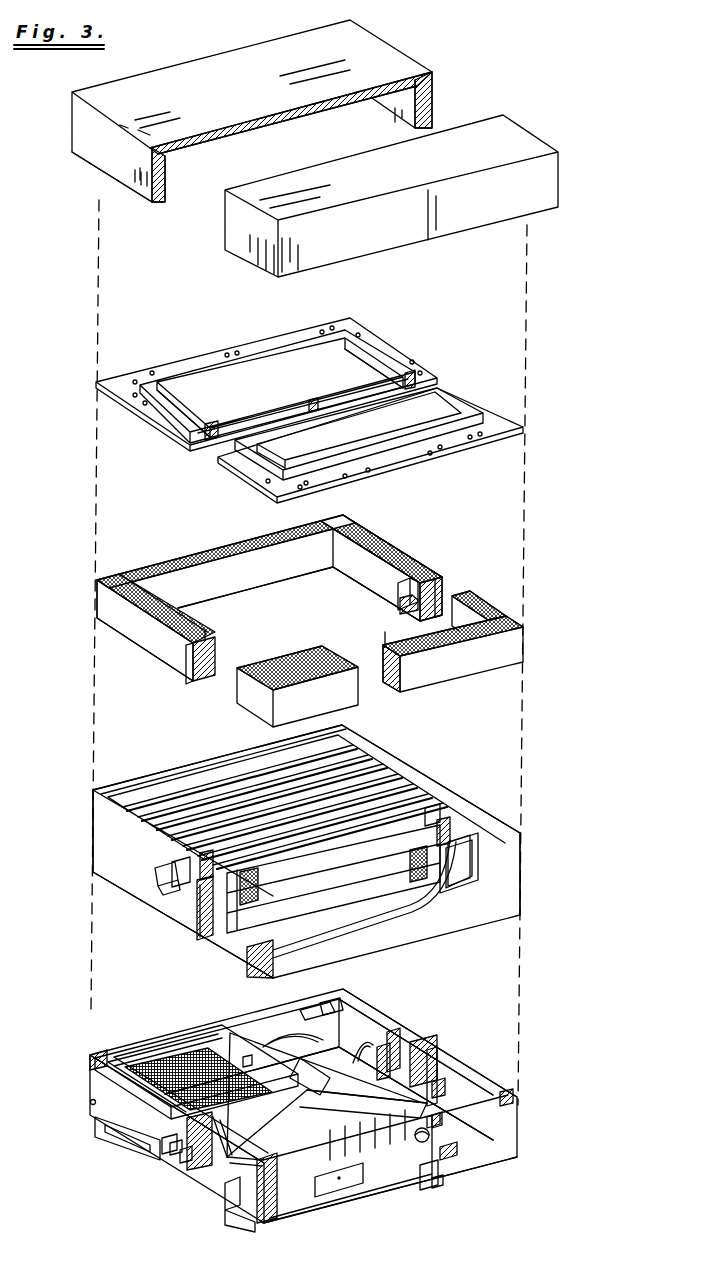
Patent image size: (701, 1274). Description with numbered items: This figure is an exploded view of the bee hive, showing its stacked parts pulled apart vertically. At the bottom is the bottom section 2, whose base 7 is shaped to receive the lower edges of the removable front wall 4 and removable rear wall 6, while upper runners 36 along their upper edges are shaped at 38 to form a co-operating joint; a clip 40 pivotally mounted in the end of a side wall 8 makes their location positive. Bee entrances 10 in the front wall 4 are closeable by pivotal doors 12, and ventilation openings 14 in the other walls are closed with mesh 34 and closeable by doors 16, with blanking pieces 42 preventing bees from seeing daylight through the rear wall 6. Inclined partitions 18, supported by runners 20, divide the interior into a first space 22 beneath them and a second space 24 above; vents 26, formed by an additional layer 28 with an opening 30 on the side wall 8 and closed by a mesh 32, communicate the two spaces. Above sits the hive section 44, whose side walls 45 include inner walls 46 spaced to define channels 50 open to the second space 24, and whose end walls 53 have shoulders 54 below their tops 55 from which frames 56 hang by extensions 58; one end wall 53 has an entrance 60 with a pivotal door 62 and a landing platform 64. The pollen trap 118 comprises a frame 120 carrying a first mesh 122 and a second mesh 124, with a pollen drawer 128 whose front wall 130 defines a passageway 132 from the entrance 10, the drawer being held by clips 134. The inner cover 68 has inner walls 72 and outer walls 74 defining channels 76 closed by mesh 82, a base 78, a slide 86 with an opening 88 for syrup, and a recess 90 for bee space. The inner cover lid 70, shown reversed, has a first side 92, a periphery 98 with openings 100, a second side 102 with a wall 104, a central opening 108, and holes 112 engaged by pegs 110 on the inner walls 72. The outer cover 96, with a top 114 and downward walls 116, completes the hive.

The bottom section 2 is at (513, 1127).
The removable front wall 4 is at (100, 1080).
The removable rear wall 6 is at (393, 1045).
The base 7 is at (338, 1135).
The side walls 8 is at (317, 1200).
The bee entrances 10 is at (197, 1163).
The pivotal doors 12 is at (232, 1203).
The ventilation openings 14 is at (437, 1178).
The doors 16 is at (340, 1193).
The inclined partitions 18 is at (257, 1037).
The runners 20 is at (320, 1085).
The first space 22 is at (363, 1080).
The second space 24 is at (337, 1033).
The vents 26 is at (428, 1180).
The additional layer 28 is at (427, 1117).
The opening 30 is at (330, 1005).
The mesh 32 is at (430, 1134).
The mesh 34 is at (455, 1152).
The upper runners 36 is at (90, 1060).
The shaped portion of upper runners 38 is at (283, 1213).
The clip 40 is at (93, 1102).
The blanking pieces 42 is at (378, 1050).
The hive section 44 is at (522, 868).
The side walls 45 is at (447, 930).
The inner walls 46 is at (462, 856).
The channels 50 is at (450, 890).
The end walls 53 is at (107, 832).
The shoulders 54 is at (200, 860).
The tops 55 is at (120, 808).
The frames 56 is at (222, 787).
The extensions 58 is at (433, 810).
The entrance 60 is at (197, 893).
The pivotal door 62 is at (172, 868).
The landing platforms 64 is at (165, 1142).
The inner cover 68 is at (162, 543).
The inner cover lid 70 is at (470, 388).
The inner walls 72 is at (218, 640).
The outer walls 74 is at (158, 640).
The channels 76 is at (195, 672).
The base 78 is at (312, 606).
The mesh 82 is at (402, 550).
The slide 86 is at (407, 582).
The opening 88 is at (417, 607).
The recess 90 is at (232, 675).
The first side 92 is at (425, 460).
The outer cover 96 is at (527, 122).
The periphery 98 is at (410, 360).
The openings 100 is at (257, 490).
The second side 102 is at (275, 393).
The wall 104 is at (290, 345).
The central opening 108 is at (314, 400).
The pegs 110 is at (390, 640).
The holes 112 is at (393, 445).
The top 114 is at (232, 62).
The walls 116 is at (120, 170).
The pollen trap 118 is at (170, 1042).
The frame 120 is at (220, 1047).
The first mesh 122 is at (227, 1157).
The second mesh 124 is at (163, 1070).
The pollen drawer 128 is at (230, 1163).
The front wall 130 is at (187, 1150).
The passageway 132 is at (177, 1145).
The clips 134 is at (247, 1060).